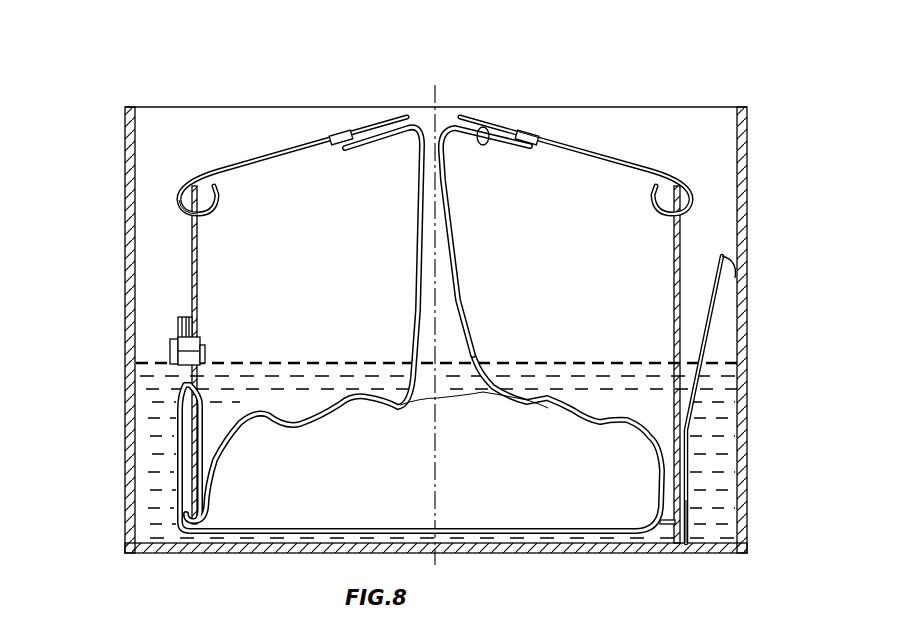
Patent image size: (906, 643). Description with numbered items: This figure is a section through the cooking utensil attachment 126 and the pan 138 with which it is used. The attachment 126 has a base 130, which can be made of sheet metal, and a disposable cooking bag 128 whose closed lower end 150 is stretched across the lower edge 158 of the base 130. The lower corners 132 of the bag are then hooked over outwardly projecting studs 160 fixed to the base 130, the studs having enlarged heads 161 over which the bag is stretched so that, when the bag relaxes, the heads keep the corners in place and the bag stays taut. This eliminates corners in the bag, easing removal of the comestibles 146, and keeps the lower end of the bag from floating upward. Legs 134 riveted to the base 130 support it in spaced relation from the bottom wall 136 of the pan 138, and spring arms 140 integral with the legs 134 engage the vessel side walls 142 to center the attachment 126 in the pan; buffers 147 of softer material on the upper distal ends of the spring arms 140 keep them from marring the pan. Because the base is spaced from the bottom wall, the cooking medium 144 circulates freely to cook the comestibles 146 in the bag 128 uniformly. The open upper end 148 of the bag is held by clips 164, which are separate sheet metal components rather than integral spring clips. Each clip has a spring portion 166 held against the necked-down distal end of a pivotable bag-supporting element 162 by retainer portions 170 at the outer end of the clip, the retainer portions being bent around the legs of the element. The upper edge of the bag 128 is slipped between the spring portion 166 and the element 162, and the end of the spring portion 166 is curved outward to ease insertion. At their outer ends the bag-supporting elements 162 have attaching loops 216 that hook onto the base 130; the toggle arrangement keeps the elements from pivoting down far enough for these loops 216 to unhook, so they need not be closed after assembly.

The cooking utensil attachment 126 is at (382, 137).
The disposable cooking bag 128 is at (421, 360).
The attachment base 130 is at (185, 256).
The lower corners of the bag 132 is at (160, 321).
The legs 134 is at (688, 524).
The bottom wall of the pan 136 is at (505, 553).
The pan 138 is at (412, 345).
The spring arms 140 is at (746, 394).
The vessel side walls 142 is at (748, 192).
The cooking medium 144 is at (600, 365).
The comestibles 146 is at (410, 420).
The buffers 147 is at (733, 274).
The open upper end of the bag 148 is at (447, 150).
The closed lower end of the bag 150 is at (600, 534).
The lower edge of the base 158 is at (668, 524).
The studs 160 is at (205, 352).
The enlarged heads 161 is at (172, 347).
The bag-supporting elements 162 is at (224, 162).
The clips 164 is at (348, 152).
The spring portion 166 is at (486, 140).
The retainer portions 170 is at (522, 130).
The element attaching loops 216 is at (176, 188).